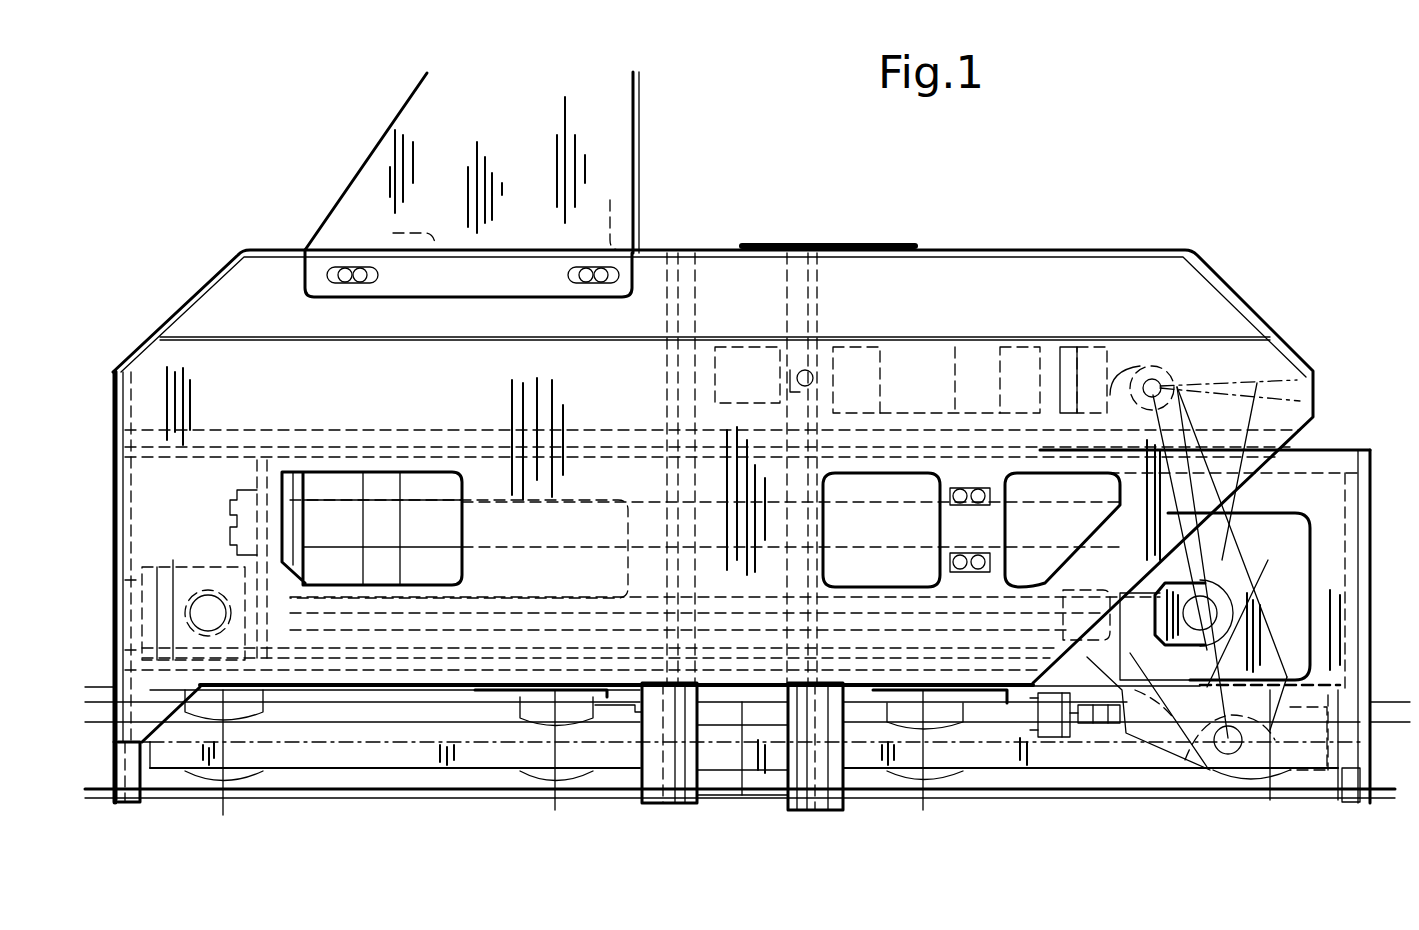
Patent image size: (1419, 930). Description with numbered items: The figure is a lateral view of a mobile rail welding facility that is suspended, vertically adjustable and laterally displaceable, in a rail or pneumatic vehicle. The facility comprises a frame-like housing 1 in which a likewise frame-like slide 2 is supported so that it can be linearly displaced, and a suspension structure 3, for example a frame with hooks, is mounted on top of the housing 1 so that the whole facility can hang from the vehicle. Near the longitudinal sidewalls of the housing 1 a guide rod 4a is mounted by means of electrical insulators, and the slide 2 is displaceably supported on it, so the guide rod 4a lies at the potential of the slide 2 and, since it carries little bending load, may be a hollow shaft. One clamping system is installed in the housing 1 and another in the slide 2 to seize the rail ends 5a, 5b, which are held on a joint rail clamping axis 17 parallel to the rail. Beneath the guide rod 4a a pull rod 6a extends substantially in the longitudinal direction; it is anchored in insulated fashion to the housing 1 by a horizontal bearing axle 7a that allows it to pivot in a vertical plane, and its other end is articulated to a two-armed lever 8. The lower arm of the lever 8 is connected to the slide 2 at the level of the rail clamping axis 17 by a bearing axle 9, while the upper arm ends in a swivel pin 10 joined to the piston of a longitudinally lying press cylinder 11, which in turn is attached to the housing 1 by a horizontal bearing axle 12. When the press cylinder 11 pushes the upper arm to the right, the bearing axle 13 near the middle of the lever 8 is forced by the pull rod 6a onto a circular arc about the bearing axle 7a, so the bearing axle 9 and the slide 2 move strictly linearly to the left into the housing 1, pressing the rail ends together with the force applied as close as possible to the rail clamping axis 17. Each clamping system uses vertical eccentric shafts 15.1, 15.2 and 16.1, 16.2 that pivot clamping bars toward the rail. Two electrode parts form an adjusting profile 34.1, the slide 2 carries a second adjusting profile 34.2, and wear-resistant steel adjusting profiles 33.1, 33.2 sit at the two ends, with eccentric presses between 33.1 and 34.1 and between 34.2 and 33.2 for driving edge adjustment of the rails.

The housing 1 is at (165, 322).
The slide 2 is at (1356, 447).
The suspension structure 3 is at (380, 136).
The guide rod 4a is at (327, 497).
The rail end 5a is at (707, 774).
The rail end 5b is at (758, 768).
The pull rod 6a is at (1135, 620).
The bearing axle 7a is at (205, 598).
The lever 8 is at (1243, 543).
The bearing axle 9 is at (1226, 757).
The swivel pin 10 is at (1160, 388).
The press cylinder 11 is at (953, 365).
The bearing axle 12 is at (810, 372).
The bearing axle 13 is at (1233, 600).
The eccentric shaft 15.1 is at (232, 790).
The eccentric shaft 15.2 is at (555, 779).
The eccentric shaft 16.1 is at (950, 785).
The eccentric shaft 16.2 is at (1272, 790).
The rail clamping axis 17 is at (153, 744).
The adjusting profile 33.1 is at (131, 806).
The adjusting profile 33.2 is at (1350, 806).
The adjusting profile 34.1 is at (650, 807).
The adjusting profile 34.2 is at (825, 765).